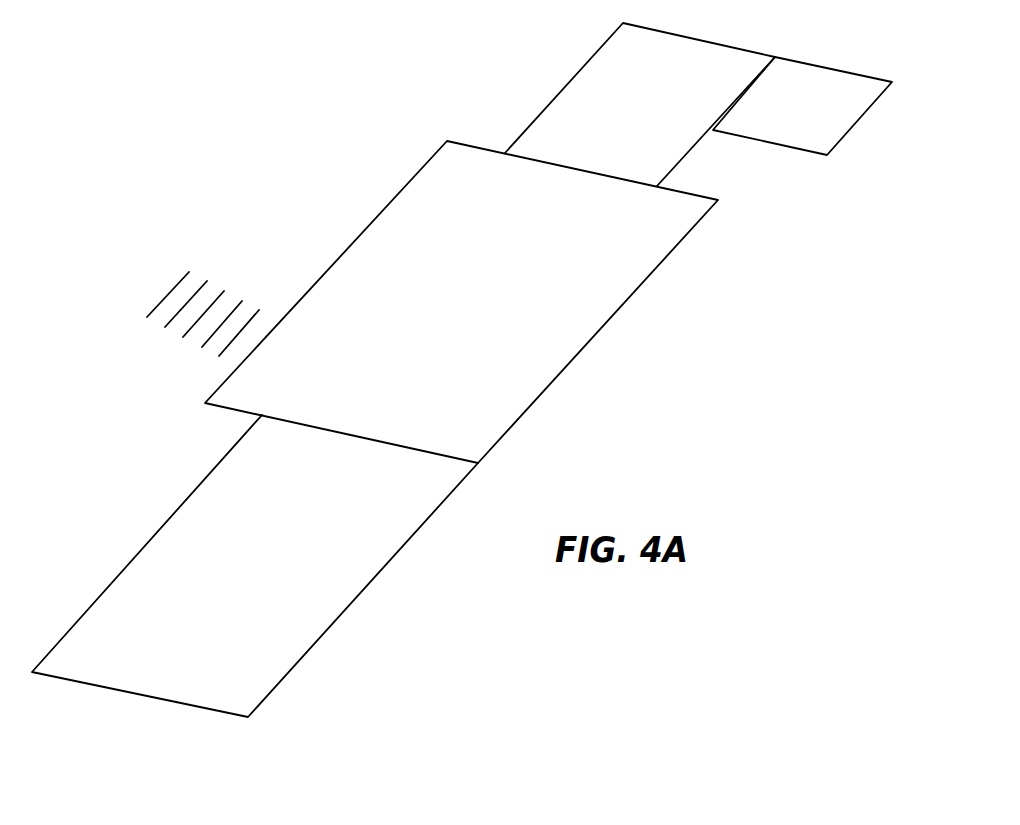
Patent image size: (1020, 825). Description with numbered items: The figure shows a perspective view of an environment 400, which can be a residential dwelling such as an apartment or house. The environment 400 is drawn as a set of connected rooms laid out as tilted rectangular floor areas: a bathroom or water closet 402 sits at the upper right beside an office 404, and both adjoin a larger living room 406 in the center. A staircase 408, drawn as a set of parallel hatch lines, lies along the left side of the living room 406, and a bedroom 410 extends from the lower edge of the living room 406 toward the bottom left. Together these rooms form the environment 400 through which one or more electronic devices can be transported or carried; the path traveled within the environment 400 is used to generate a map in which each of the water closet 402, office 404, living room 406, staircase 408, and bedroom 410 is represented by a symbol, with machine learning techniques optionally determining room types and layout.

The environment 400 is at (198, 186).
The water closet 402 is at (805, 88).
The office 404 is at (648, 77).
The living room 406 is at (463, 260).
The staircase 408 is at (185, 320).
The bedroom 410 is at (257, 545).